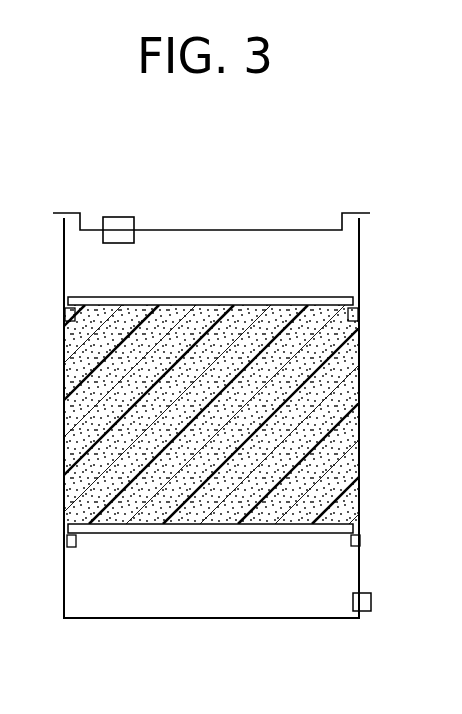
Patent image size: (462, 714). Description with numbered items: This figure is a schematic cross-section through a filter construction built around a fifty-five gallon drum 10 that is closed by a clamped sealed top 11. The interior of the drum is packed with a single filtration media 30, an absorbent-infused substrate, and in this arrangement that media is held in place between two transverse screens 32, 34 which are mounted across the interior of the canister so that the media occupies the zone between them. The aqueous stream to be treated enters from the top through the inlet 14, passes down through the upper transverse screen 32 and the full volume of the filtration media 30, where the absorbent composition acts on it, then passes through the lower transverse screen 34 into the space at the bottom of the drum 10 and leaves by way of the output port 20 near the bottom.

The drum 10 is at (42, 371).
The clamped sealed top 11 is at (382, 207).
The inlet 14 is at (118, 204).
The output port 20 is at (372, 600).
The filtration media 30 is at (328, 360).
The transverse screen 32 is at (351, 288).
The transverse screen 34 is at (346, 516).